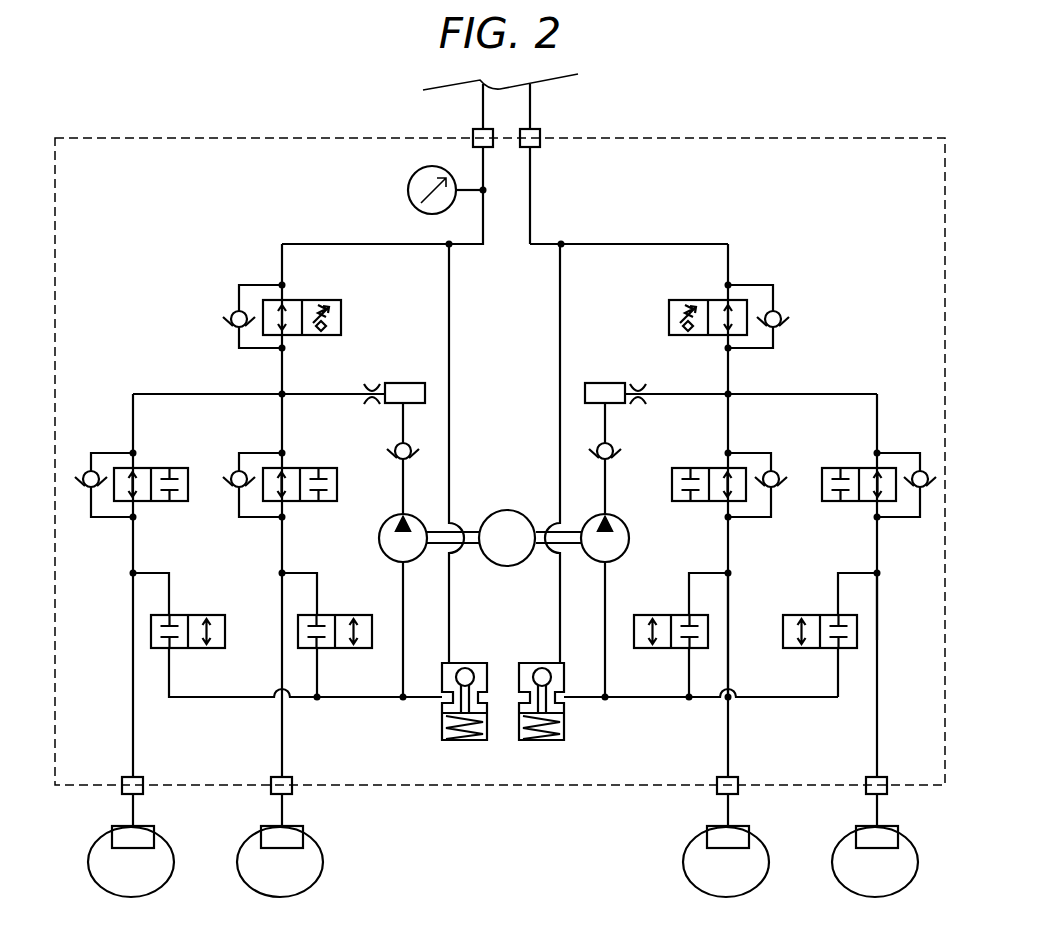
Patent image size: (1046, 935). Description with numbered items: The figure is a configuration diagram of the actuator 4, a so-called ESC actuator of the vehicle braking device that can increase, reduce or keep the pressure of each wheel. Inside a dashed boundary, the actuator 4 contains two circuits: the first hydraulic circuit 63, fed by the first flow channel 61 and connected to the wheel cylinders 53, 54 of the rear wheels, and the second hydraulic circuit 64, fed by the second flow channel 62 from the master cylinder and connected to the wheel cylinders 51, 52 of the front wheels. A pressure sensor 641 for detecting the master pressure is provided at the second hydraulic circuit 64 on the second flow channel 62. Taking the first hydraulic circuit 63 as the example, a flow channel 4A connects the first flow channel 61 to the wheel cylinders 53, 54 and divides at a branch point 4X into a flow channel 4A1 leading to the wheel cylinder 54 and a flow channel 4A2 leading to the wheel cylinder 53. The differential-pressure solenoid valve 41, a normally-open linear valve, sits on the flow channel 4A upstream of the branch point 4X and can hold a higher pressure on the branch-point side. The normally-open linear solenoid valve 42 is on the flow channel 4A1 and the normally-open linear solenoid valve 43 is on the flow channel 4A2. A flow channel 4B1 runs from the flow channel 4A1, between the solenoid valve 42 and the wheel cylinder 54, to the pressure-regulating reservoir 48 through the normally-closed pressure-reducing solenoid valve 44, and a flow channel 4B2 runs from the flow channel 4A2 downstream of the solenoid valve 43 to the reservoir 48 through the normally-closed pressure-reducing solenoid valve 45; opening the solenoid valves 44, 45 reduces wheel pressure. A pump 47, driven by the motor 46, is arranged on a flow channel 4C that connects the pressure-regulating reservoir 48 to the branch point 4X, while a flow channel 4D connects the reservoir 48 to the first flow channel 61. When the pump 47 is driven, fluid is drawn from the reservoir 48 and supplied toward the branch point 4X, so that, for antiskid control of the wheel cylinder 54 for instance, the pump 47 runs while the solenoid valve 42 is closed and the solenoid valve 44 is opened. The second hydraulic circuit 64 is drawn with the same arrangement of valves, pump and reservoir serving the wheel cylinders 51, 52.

The actuator 4 is at (103, 137).
The second hydraulic circuit 64 is at (161, 231).
The first hydraulic circuit 63 is at (860, 236).
The pressure sensor 641 is at (408, 194).
The second flow channel 62 is at (483, 103).
The first flow channel 61 is at (530, 113).
The flow channel 4A is at (666, 232).
The solenoid valve 41 is at (669, 298).
The branch point 4X is at (730, 393).
The flow channel 4D is at (559, 433).
The motor 46 is at (509, 508).
The pump 47 is at (628, 538).
The solenoid valve 43 is at (686, 468).
The solenoid valve 42 is at (835, 468).
The solenoid valve 45 is at (641, 614).
The solenoid valve 44 is at (805, 614).
The flow channel 4C is at (603, 603).
The flow channel 4A2 is at (730, 594).
The flow channel 4A1 is at (878, 607).
The flow channel 4B2 is at (689, 668).
The flow channel 4B1 is at (770, 699).
The pressure-regulating reservoir 48 is at (565, 730).
The wheel cylinder 51 is at (120, 822).
The wheel cylinder 52 is at (268, 822).
The wheel cylinder 53 is at (712, 822).
The wheel cylinder 54 is at (867, 822).